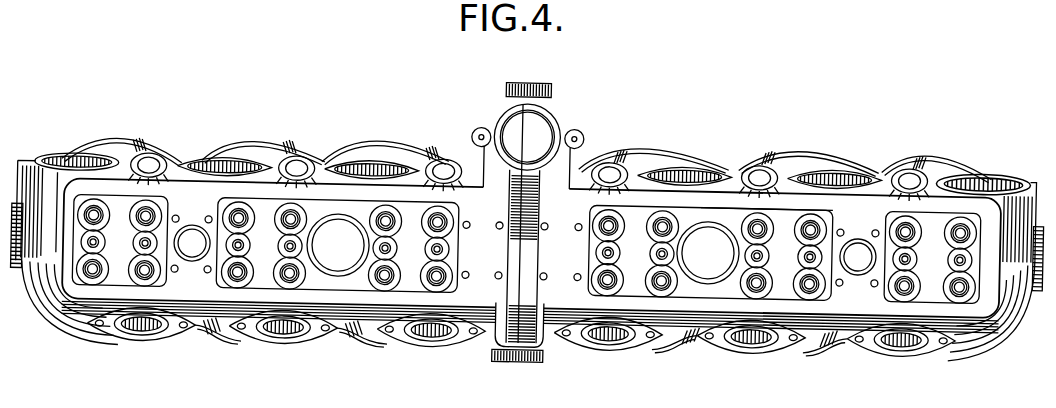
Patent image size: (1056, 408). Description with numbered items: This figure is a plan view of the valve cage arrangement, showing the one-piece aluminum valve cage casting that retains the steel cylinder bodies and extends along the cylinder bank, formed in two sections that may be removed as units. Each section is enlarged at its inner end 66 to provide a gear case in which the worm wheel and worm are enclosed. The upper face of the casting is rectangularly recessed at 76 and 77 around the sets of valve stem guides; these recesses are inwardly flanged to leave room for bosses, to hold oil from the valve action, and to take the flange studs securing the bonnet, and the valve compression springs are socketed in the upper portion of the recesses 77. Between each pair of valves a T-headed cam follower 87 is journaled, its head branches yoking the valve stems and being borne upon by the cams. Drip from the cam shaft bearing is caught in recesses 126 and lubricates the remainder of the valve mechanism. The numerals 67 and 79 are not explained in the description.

The enlarged inner end 66 is at (547, 343).
The nut 67 is at (497, 361).
The rectangular recess 76 is at (687, 214).
The rectangular recess 77 is at (916, 215).
The opening 79 is at (713, 276).
The T-headed cam follower 87 is at (657, 247).
The recess 126 is at (786, 206).